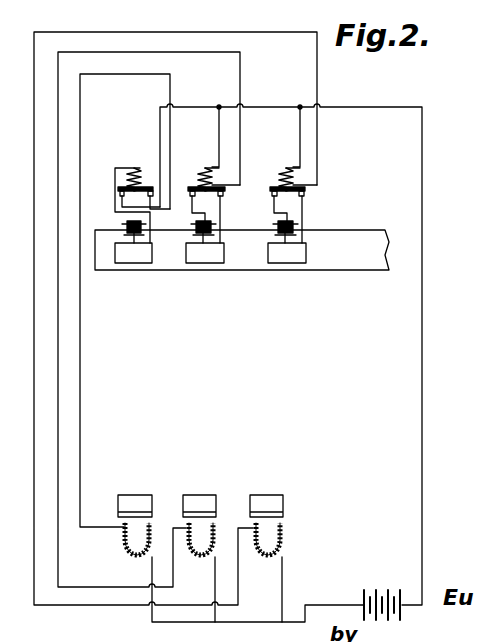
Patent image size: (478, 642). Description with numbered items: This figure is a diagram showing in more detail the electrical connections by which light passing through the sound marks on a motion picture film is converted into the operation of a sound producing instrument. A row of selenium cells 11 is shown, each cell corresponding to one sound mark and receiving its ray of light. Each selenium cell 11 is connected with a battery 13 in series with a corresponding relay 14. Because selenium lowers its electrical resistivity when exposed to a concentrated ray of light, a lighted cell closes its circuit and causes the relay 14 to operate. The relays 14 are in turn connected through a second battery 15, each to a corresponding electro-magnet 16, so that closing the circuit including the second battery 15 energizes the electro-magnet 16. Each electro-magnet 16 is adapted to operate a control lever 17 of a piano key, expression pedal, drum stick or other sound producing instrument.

The selenium cell 11 is at (298, 256).
The battery 13 is at (128, 224).
The relay 14 is at (132, 170).
The second battery 15 is at (377, 590).
The electro-magnet 16 is at (122, 542).
The control lever 17 is at (142, 496).